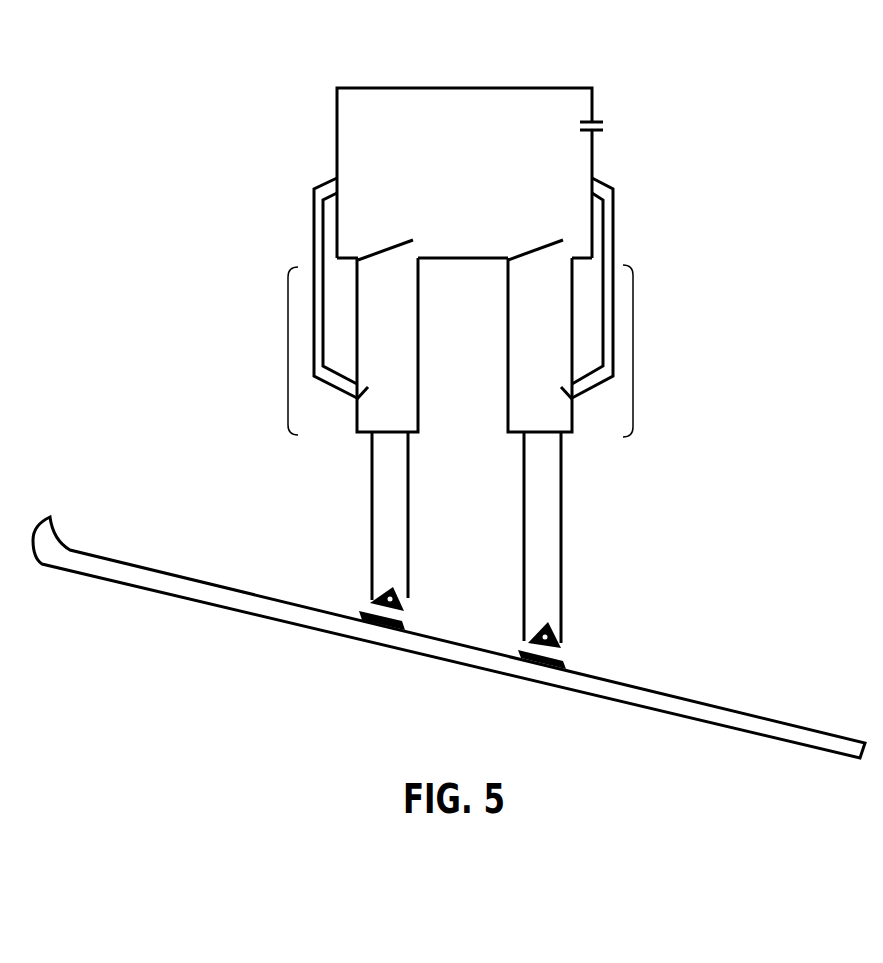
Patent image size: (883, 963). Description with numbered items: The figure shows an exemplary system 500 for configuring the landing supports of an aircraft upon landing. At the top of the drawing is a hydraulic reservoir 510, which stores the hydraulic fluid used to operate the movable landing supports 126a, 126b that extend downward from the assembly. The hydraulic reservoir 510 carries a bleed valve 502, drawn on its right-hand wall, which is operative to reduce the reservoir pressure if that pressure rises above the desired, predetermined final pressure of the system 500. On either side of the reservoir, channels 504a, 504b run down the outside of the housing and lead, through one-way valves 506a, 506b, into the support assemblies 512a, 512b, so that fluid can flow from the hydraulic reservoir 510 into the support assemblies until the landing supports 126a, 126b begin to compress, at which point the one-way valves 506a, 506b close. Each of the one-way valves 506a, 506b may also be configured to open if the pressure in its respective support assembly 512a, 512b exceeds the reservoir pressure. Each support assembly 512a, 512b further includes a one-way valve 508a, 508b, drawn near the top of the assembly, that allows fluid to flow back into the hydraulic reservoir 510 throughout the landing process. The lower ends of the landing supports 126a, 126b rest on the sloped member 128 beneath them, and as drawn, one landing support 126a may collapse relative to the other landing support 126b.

The system 500 is at (690, 31).
The bleed valve 502 is at (626, 127).
The channel 504a is at (312, 250).
The channel 504b is at (615, 247).
The one-way valve 506a is at (366, 370).
The one-way valve 506b is at (558, 370).
The one-way valve 508a is at (386, 229).
The one-way valve 508b is at (535, 229).
The hydraulic reservoir 510 is at (353, 125).
The support assembly 512a is at (288, 352).
The support assembly 512b is at (633, 348).
The landing support 126a is at (372, 497).
The landing support 126b is at (562, 502).
The skid 128 is at (738, 710).